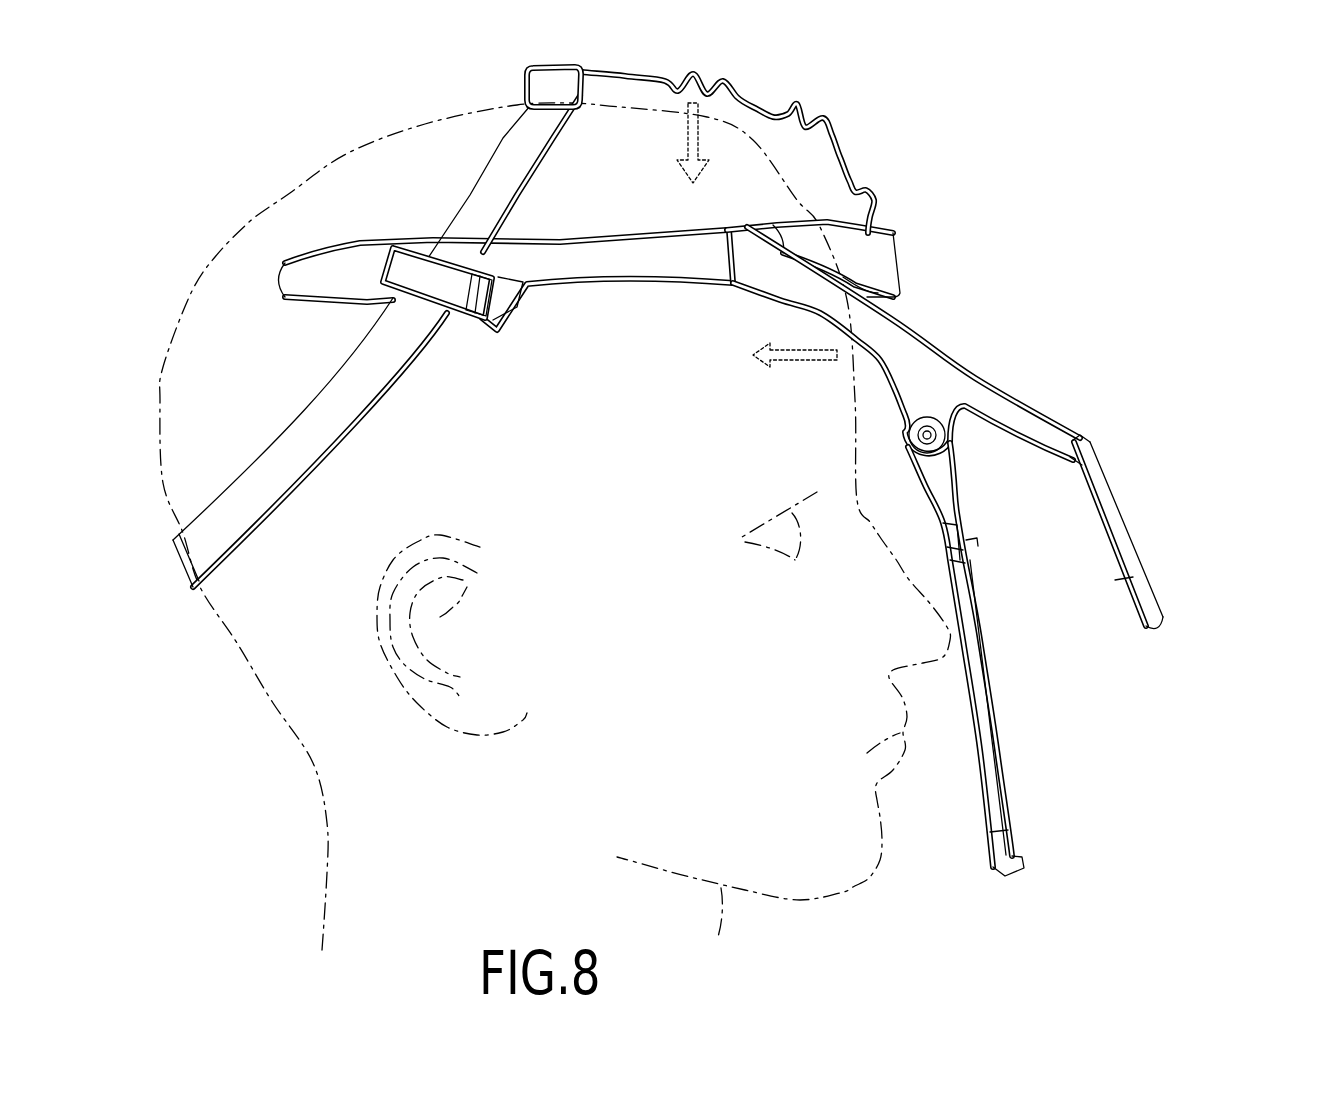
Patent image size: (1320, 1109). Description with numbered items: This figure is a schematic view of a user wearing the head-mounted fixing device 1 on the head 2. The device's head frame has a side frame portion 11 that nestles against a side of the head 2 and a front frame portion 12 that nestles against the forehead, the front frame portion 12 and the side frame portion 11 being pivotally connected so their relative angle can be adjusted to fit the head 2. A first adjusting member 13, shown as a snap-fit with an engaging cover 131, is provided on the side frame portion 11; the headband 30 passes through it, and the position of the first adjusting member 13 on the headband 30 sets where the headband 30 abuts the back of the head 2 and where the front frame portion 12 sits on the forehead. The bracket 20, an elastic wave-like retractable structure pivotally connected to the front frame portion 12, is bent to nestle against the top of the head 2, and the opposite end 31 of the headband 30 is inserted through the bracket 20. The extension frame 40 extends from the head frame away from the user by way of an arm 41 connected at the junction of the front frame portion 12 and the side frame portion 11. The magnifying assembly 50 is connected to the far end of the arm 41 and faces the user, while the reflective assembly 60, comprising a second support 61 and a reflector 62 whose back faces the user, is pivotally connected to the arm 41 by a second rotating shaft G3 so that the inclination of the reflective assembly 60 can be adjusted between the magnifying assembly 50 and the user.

The head-mounted fixing device 1 is at (1070, 142).
The head 2 is at (260, 217).
The side frame portion 11 is at (585, 262).
The front frame portion 12 is at (885, 257).
The first adjusting member 13 is at (445, 334).
The engaging cover 131 is at (460, 290).
The bracket 20 is at (767, 103).
The headband 30 is at (315, 417).
The opposite end of the headband 31 is at (547, 90).
The extension frame 40 is at (913, 343).
The arm 41 is at (935, 368).
The magnifying assembly 50 is at (1130, 532).
The reflective assembly 60 is at (1024, 674).
The second support 61 is at (993, 809).
The reflector 62 is at (1003, 743).
The second rotating shaft G3 is at (938, 437).